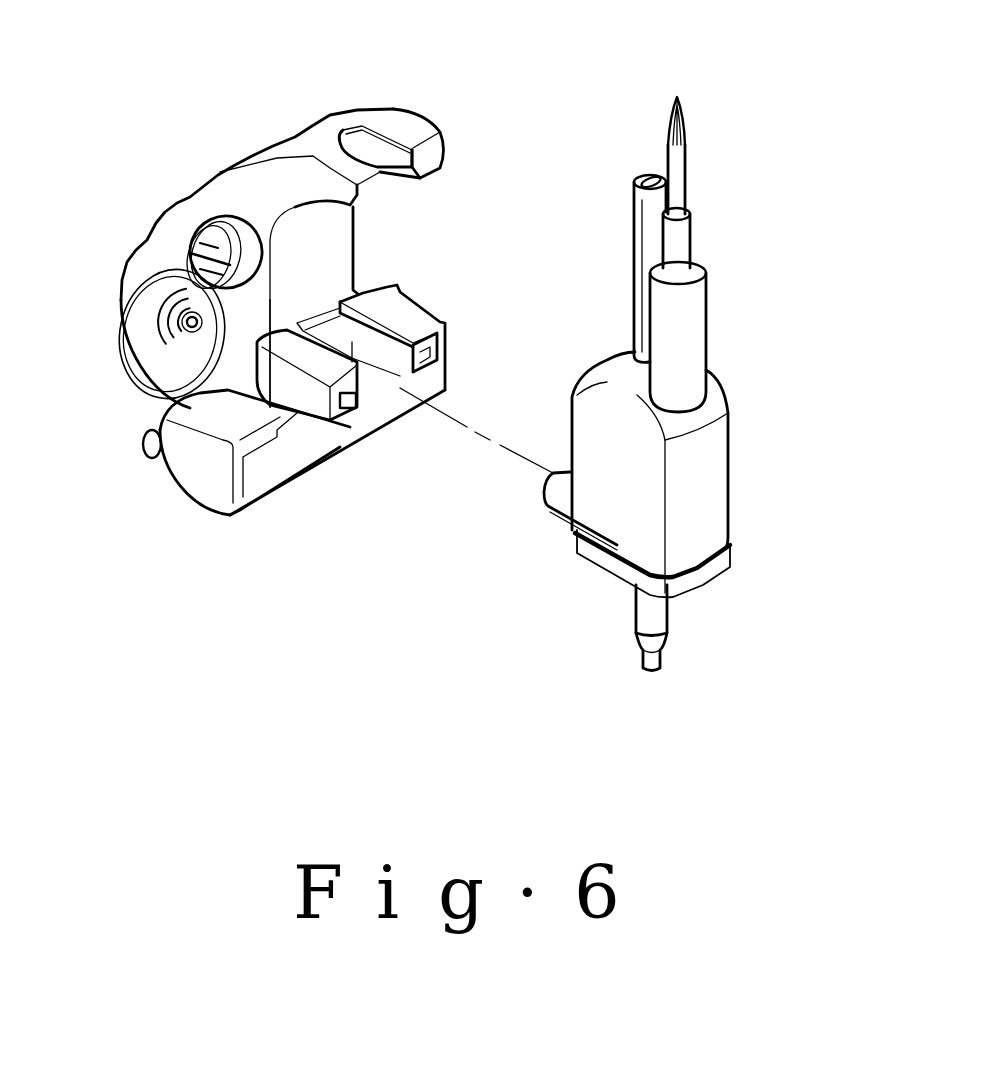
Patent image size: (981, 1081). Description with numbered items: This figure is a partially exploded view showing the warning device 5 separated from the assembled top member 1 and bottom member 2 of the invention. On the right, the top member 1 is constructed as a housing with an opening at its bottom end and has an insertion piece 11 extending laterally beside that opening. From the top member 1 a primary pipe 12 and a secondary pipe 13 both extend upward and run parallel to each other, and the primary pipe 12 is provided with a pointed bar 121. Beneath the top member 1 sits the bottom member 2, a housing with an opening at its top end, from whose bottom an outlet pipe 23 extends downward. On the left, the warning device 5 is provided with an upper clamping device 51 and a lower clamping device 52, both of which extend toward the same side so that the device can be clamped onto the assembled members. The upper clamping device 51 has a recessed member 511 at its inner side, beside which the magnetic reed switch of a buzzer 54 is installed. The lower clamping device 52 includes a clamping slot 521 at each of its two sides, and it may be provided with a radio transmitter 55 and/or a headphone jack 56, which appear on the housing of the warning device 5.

The top member 1 is at (700, 507).
The insertion piece 11 is at (562, 490).
The primary pipe 12 is at (688, 315).
The pointed bar 121 is at (697, 150).
The secondary pipe 13 is at (632, 235).
The bottom member 2 is at (715, 583).
The outlet pipe 23 is at (648, 618).
The warning device 5 is at (173, 193).
The upper clamping device 51 is at (417, 135).
The recessed member 511 is at (368, 147).
The lower clamping device 52 is at (298, 390).
The clamping slot 521 is at (350, 398).
The buzzer 54 is at (218, 222).
The radio transmitter 55 is at (192, 465).
The headphone jack 56 is at (190, 324).